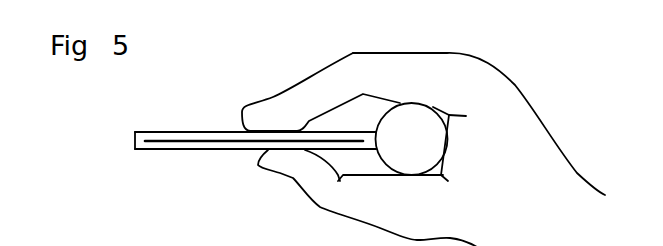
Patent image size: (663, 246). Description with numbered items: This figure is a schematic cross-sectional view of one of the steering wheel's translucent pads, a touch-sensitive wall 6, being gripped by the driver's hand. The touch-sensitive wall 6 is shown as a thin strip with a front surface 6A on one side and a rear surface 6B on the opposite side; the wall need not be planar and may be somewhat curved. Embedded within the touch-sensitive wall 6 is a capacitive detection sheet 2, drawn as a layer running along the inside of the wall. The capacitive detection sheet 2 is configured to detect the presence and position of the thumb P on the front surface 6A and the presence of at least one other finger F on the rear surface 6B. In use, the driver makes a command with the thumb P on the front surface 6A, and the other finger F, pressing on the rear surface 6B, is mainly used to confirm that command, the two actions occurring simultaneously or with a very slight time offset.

The touch-sensitive translucent wall 6 is at (143, 123).
The front surface 6A is at (206, 131).
The rear surface 6B is at (155, 151).
The capacitive detection sheet 2 is at (200, 150).
The other finger F is at (283, 95).
The thumb P is at (295, 178).